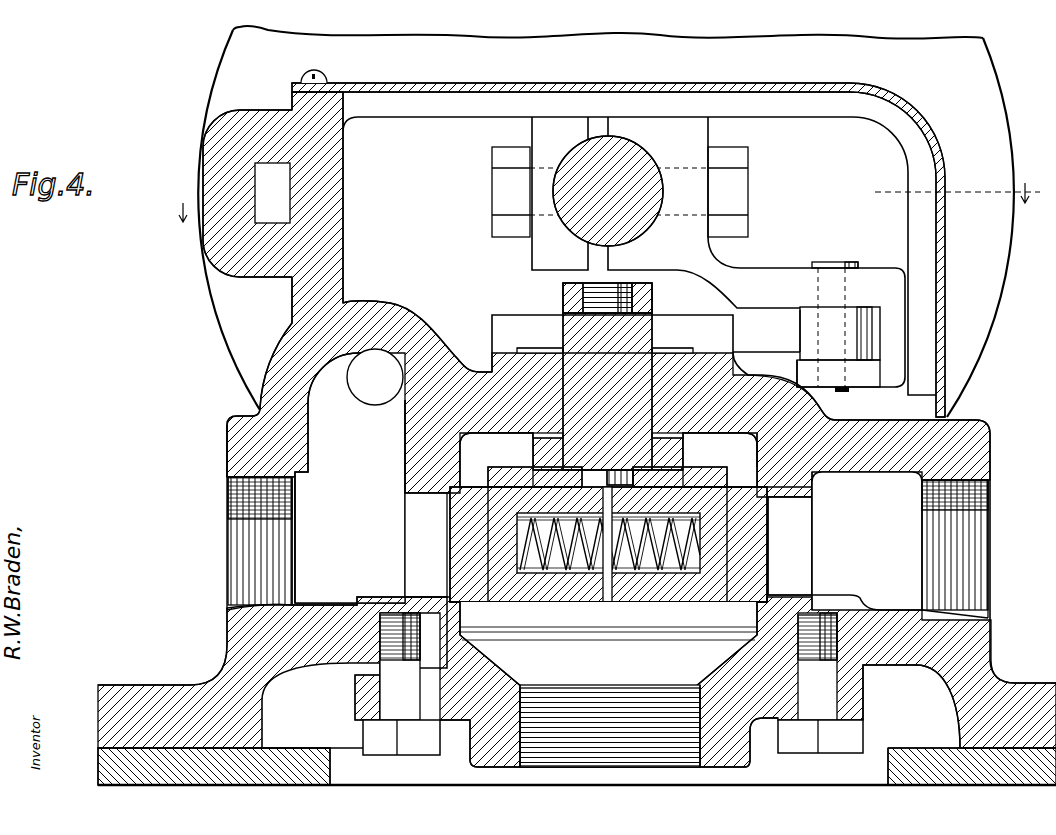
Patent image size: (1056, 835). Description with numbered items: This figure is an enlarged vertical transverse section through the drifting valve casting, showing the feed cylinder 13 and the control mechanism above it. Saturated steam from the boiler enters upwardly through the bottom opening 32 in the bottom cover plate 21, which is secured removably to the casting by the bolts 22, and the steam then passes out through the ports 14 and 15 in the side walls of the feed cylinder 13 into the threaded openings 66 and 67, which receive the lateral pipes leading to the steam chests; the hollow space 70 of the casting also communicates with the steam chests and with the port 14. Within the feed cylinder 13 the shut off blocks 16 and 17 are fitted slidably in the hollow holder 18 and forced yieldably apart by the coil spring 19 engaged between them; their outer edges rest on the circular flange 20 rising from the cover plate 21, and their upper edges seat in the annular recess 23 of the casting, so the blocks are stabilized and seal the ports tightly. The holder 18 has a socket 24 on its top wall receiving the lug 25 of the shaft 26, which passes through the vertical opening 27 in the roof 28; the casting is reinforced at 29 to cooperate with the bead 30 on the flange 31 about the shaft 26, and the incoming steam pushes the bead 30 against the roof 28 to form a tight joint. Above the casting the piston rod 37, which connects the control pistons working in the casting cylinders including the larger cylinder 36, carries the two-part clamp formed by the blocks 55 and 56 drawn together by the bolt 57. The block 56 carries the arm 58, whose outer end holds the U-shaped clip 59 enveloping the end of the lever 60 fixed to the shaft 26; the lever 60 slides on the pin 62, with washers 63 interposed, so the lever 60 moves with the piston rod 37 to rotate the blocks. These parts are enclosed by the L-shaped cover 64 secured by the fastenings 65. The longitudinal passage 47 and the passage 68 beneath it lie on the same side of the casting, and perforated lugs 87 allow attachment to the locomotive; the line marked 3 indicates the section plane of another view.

The section line 3- 3 is at (162, 213).
The feed cylinder 13 is at (800, 480).
The port 14 is at (415, 553).
The port 15 is at (795, 535).
The shut off block 16 is at (450, 511).
The shut off block 17 is at (775, 513).
The hollow holder 18 is at (621, 624).
The coil spring 19 is at (580, 578).
The circular flange 20 is at (795, 598).
The bottom cover plate 21 is at (760, 740).
The bolt 22 is at (415, 760).
The annular recess 23 is at (452, 482).
The socket 24 is at (660, 478).
The lug 25 is at (560, 478).
The shaft 26 is at (562, 320).
The vertical opening 27 is at (735, 368).
The roof 28 is at (770, 404).
The reinforcement 29 is at (700, 444).
The bead 30 is at (540, 430).
The flange 31 is at (530, 447).
The bottom opening 32 is at (600, 765).
The larger cylinder 36 is at (995, 180).
The piston rod 37 is at (614, 138).
The longitudinal passage 47 is at (263, 172).
The clamp block 55 is at (548, 124).
The clamp block 56 is at (685, 125).
The bolt 57 is at (500, 206).
The arm 58 is at (800, 268).
The clip 59 is at (893, 354).
The lever 60 is at (752, 330).
The pin 62 is at (850, 262).
The washer 63 is at (868, 350).
The cover 64 is at (905, 105).
The fastening 65 is at (322, 78).
The threaded opening 66 is at (238, 551).
The threaded opening 67 is at (978, 545).
The passage 68 is at (370, 378).
The hollow space 70 is at (325, 448).
The perforated lug 87 is at (1040, 700).